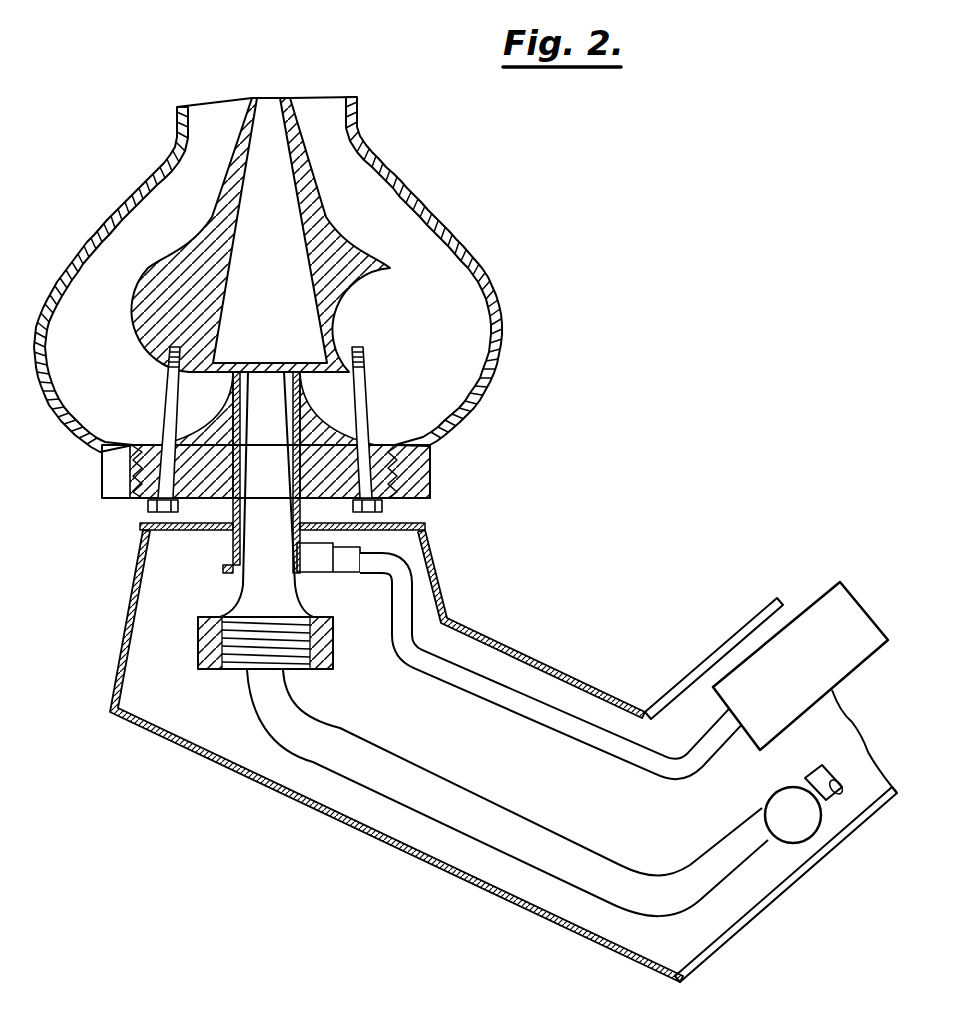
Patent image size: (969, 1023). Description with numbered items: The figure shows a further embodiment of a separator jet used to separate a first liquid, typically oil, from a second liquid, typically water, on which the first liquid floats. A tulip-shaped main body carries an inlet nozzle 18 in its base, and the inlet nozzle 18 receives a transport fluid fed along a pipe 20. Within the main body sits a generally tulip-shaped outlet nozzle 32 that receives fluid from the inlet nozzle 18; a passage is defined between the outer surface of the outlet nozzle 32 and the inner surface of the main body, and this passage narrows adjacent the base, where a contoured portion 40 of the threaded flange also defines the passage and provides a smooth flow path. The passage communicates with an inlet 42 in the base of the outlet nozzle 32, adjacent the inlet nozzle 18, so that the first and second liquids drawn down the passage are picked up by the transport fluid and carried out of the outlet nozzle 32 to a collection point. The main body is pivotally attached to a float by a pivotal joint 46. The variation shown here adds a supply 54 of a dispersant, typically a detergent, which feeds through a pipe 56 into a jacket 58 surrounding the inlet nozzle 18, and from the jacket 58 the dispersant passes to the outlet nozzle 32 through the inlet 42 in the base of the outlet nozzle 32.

The inlet nozzle 18 is at (253, 560).
The pipe 20 is at (510, 830).
The outlet nozzle 32 is at (205, 243).
The contoured portion 40 is at (325, 412).
The inlet 42 is at (225, 365).
The pivotal joint 46 is at (773, 802).
The supply 54 is at (840, 660).
The pipe 56 is at (525, 702).
The jacket 58 is at (312, 512).